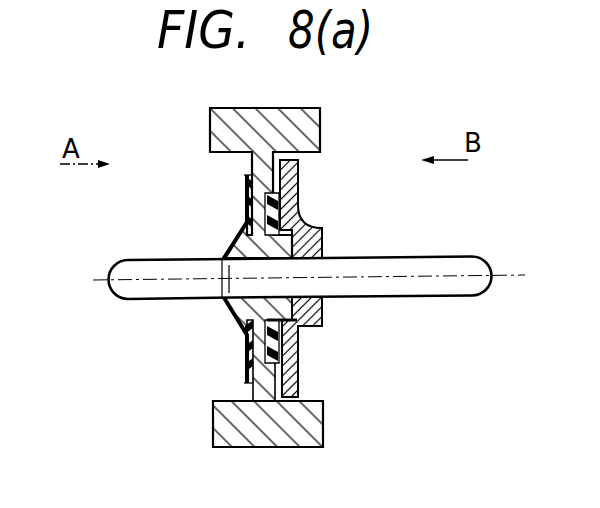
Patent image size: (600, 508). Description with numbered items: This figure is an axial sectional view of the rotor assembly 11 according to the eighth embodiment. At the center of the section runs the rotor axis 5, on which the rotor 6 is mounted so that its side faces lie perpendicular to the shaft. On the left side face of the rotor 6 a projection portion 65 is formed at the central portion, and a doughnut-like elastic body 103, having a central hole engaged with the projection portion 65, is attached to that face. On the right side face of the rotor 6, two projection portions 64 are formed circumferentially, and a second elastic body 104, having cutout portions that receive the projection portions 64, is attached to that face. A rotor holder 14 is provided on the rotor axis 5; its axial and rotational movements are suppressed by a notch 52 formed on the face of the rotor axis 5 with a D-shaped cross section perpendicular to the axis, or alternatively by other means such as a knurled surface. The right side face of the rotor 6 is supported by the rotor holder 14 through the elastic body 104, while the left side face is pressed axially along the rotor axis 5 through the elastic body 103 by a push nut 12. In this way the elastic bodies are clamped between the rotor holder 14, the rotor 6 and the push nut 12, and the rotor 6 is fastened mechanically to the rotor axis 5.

The rotor axis 5 is at (488, 262).
The rotor 6 is at (310, 127).
The rotor assembly 11 is at (255, 266).
The push nut 12 is at (242, 235).
The rotor holder 14 is at (320, 221).
The notch 52 is at (322, 288).
The projection portions 64 is at (305, 378).
The projection portion 65 is at (238, 314).
The elastic body 103 is at (243, 183).
The elastic body 104 is at (302, 200).